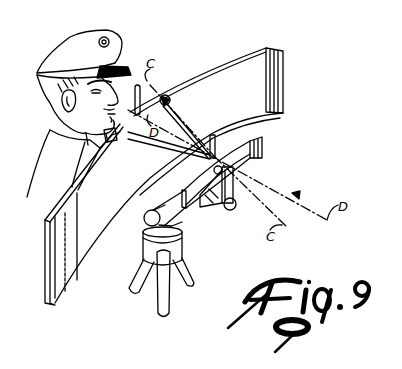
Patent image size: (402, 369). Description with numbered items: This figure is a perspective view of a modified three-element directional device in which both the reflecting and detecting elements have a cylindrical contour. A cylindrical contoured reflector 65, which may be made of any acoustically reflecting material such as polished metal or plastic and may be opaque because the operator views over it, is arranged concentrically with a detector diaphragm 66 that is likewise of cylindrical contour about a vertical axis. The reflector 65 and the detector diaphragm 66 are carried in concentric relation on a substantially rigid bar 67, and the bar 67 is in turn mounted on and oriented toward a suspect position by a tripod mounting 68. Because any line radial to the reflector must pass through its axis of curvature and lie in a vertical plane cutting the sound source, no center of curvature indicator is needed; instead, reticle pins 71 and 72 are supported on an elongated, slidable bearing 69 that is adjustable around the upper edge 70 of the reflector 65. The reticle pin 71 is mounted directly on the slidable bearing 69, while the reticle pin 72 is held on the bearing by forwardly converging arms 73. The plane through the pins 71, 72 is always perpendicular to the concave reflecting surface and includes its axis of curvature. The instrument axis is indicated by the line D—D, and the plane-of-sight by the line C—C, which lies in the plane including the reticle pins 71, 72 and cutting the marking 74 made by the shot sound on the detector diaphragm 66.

The cylindrical contoured reflector 65 is at (282, 50).
The detector diaphragm 66 is at (263, 137).
The rigid bar 67 is at (204, 214).
The tripod mounting 68 is at (185, 250).
The slidable bearing 69 is at (115, 144).
The upper edge of the reflector 70 is at (224, 62).
The reticle pin 71 is at (160, 84).
The reticle pin 72 is at (218, 137).
The forwardly converging arms 73 is at (188, 112).
The marking 74 is at (223, 170).